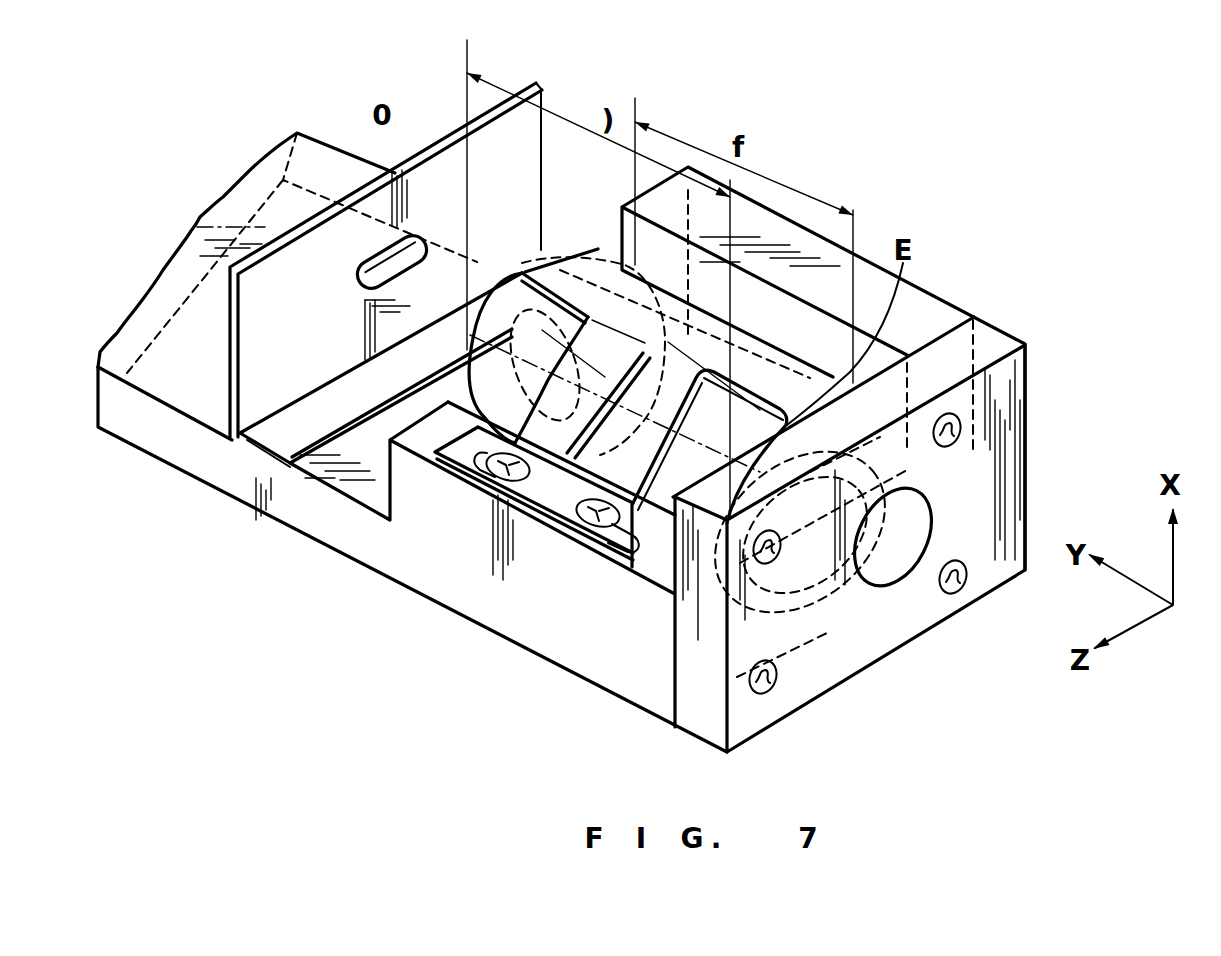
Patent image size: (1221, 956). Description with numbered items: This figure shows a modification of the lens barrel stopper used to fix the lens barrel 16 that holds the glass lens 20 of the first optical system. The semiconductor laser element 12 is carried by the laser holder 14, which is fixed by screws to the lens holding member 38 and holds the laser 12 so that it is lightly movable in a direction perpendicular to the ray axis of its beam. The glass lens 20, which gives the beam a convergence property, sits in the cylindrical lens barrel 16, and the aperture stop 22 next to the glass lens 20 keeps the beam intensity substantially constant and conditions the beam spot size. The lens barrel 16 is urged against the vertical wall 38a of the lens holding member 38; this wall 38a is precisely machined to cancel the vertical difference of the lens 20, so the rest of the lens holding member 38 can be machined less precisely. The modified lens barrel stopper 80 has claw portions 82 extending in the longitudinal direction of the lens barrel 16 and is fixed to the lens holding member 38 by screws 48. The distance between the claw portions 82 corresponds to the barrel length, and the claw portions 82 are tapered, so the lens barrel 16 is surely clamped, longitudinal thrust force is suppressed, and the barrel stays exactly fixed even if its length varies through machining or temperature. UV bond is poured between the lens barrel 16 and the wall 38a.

The semiconductor laser element 12 is at (912, 560).
The laser holder 14 is at (1018, 407).
The lens barrel 16 is at (672, 462).
The glass lens 20 is at (604, 290).
The aperture stop 22 is at (533, 128).
The lens holding member 38 is at (375, 575).
The vertical wall 38a is at (853, 380).
The screws 48 is at (473, 495).
The lens barrel stopper 80 is at (720, 332).
The claw portions 82 is at (558, 240).